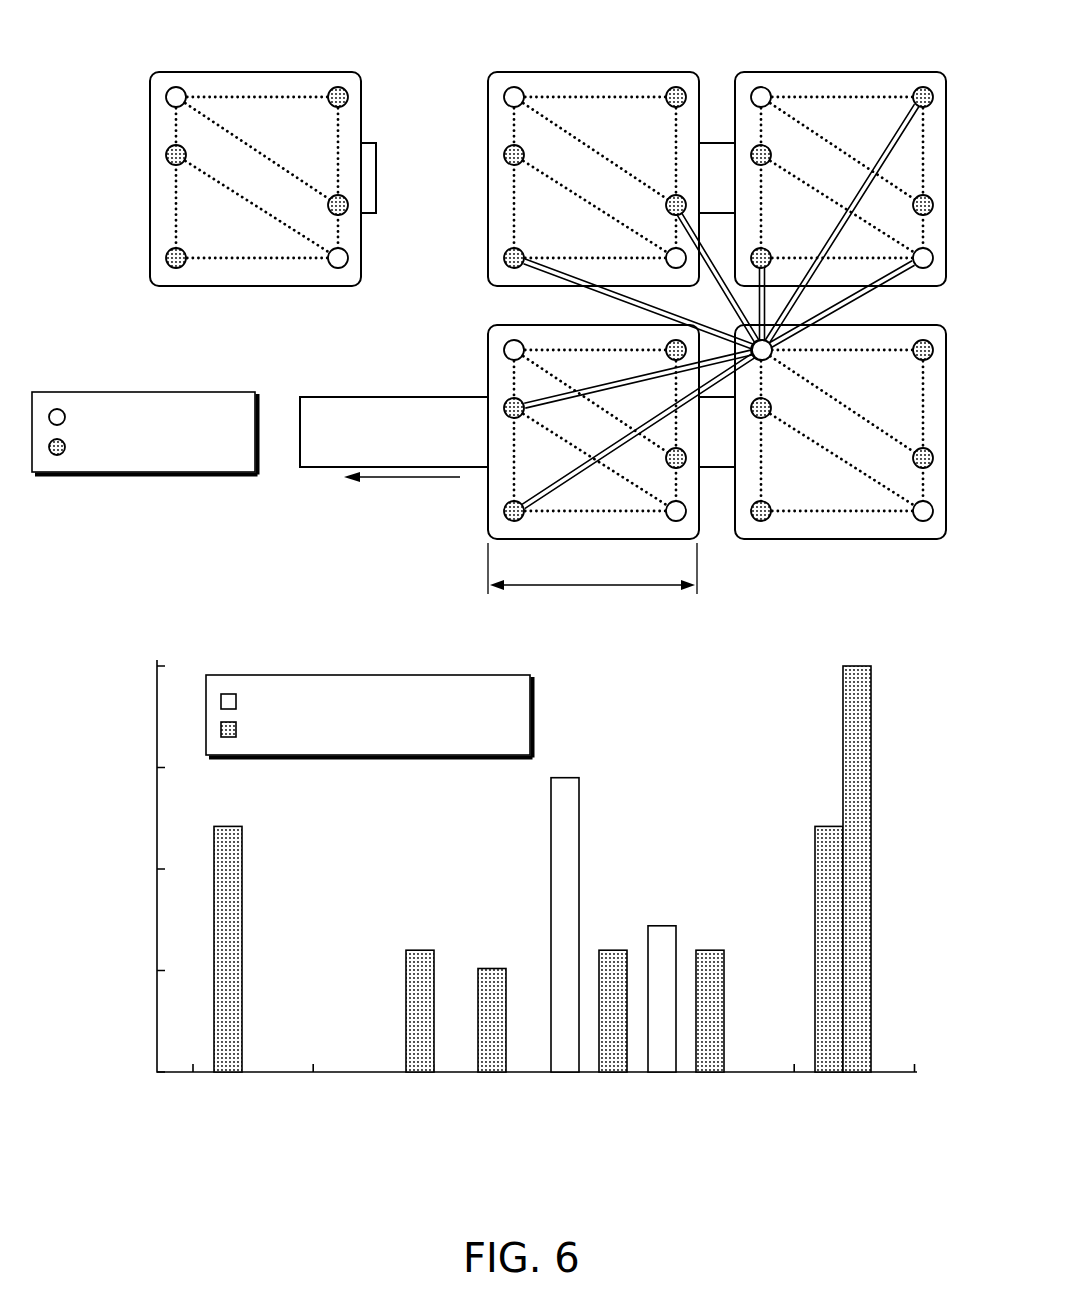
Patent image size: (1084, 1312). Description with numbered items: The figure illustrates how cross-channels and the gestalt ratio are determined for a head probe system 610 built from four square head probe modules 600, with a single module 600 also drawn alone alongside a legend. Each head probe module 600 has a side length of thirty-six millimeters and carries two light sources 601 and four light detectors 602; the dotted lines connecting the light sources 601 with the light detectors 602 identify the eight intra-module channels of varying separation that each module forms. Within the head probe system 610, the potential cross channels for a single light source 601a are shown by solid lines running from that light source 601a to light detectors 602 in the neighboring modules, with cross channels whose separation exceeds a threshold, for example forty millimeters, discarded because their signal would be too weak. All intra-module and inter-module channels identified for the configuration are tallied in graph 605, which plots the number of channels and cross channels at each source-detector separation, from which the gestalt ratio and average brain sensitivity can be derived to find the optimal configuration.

The square head probe module 600 is at (206, 307).
The head probe system 610 is at (602, 42).
The light source 601 is at (160, 416).
The light detector 602 is at (170, 446).
The single light source 601a is at (788, 357).
The graph 605 is at (242, 1148).